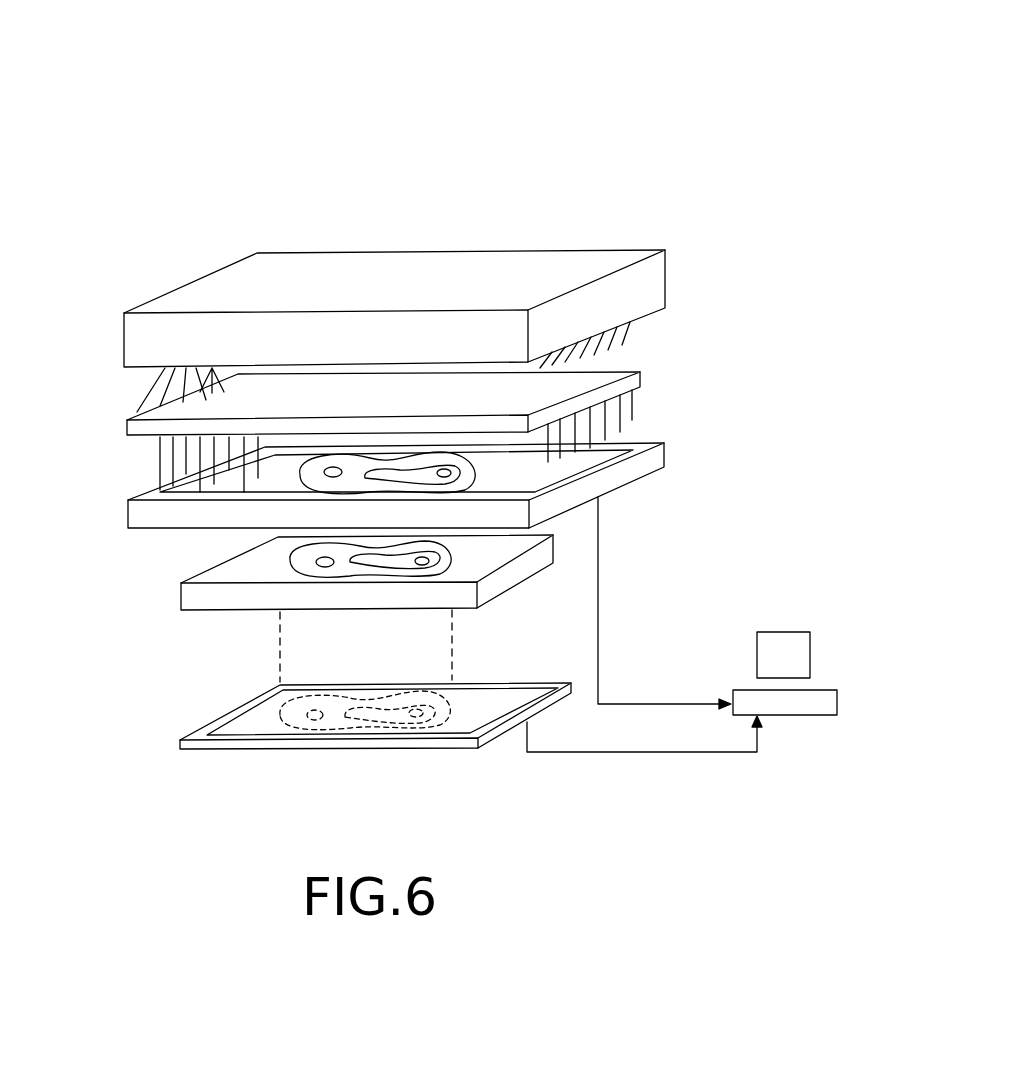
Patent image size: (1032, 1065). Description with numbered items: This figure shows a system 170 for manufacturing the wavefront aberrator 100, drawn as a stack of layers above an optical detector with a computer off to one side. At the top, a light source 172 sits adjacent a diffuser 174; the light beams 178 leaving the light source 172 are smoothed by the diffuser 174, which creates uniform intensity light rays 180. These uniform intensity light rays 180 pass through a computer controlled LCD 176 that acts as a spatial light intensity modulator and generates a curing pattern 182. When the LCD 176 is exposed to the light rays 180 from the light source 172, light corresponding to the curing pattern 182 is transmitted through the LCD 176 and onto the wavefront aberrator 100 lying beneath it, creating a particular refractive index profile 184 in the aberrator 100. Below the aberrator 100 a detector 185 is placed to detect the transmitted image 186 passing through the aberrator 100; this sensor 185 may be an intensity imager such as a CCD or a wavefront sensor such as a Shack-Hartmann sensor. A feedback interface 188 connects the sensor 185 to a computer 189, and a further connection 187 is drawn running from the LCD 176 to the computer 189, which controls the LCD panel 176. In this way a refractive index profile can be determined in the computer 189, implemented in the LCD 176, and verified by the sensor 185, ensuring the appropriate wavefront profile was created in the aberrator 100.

The system 170 is at (802, 95).
The light source 172 is at (668, 274).
The diffuser 174 is at (641, 379).
The computer controlled LCD 176 is at (668, 452).
The light beams 178 is at (140, 382).
The uniform intensity light rays 180 is at (155, 467).
The curing pattern 182 is at (300, 480).
The refractive index profile 184 is at (312, 560).
The wavefront aberrator 100 is at (172, 607).
The detector 185 is at (203, 750).
The transmitted image 186 is at (280, 752).
The sensor cable 187 is at (599, 548).
The feedback interface 188 is at (608, 752).
The computer 189 is at (845, 692).